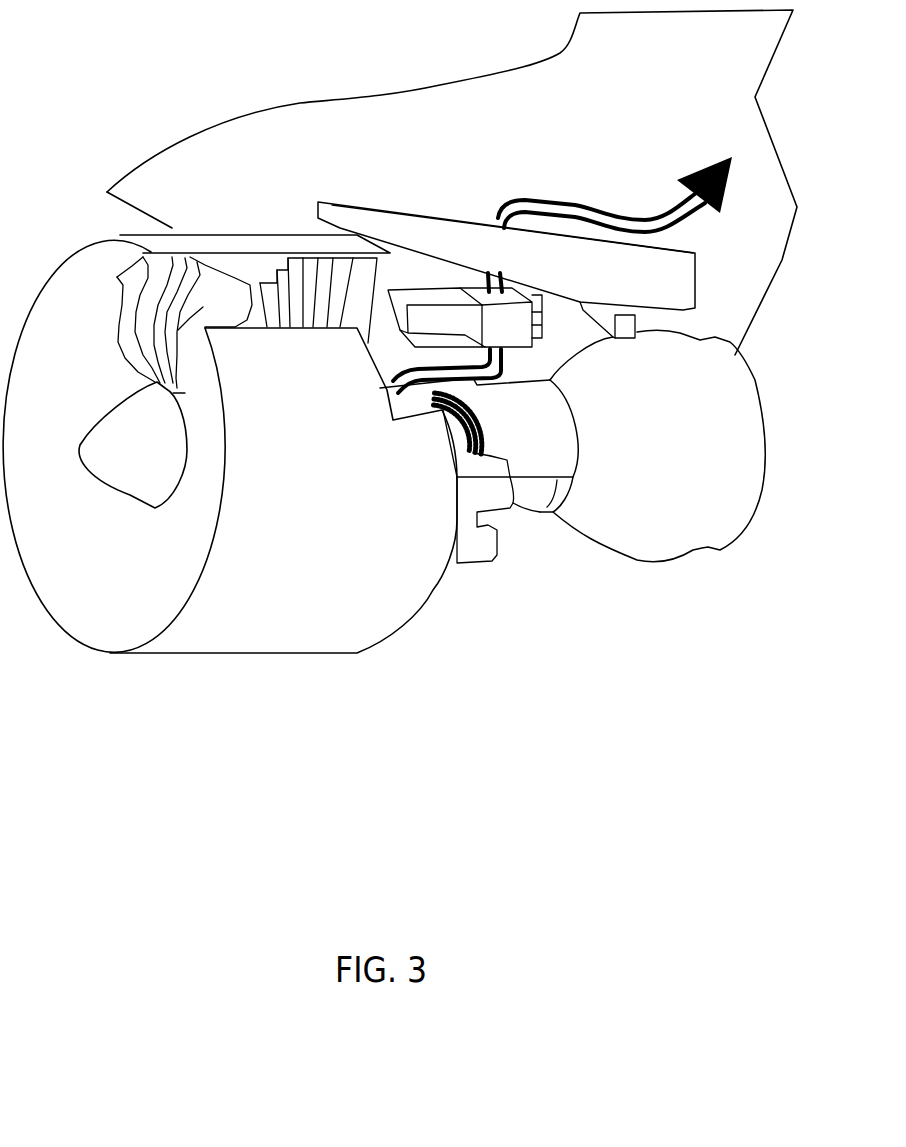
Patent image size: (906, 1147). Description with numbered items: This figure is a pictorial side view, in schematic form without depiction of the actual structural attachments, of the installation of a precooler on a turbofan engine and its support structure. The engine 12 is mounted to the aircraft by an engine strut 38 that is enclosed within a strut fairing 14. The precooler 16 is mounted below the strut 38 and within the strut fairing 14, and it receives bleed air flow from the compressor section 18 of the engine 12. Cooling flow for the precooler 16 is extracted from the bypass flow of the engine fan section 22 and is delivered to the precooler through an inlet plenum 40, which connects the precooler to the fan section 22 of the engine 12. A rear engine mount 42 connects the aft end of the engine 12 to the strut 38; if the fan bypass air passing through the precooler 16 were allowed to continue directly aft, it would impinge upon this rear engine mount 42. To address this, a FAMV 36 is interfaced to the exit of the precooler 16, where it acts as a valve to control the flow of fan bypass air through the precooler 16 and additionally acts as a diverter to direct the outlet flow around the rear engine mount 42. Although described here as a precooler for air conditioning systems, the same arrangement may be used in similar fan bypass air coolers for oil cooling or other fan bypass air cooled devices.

The engine 12 is at (447, 635).
The strut fairing 14 is at (313, 110).
The precooler 16 is at (482, 260).
The compressor section 18 is at (510, 510).
The fan section 22 is at (215, 257).
The FAMV 36 is at (543, 317).
The engine strut 38 is at (412, 222).
The inlet plenum 40 is at (437, 317).
The rear engine mount 42 is at (627, 328).